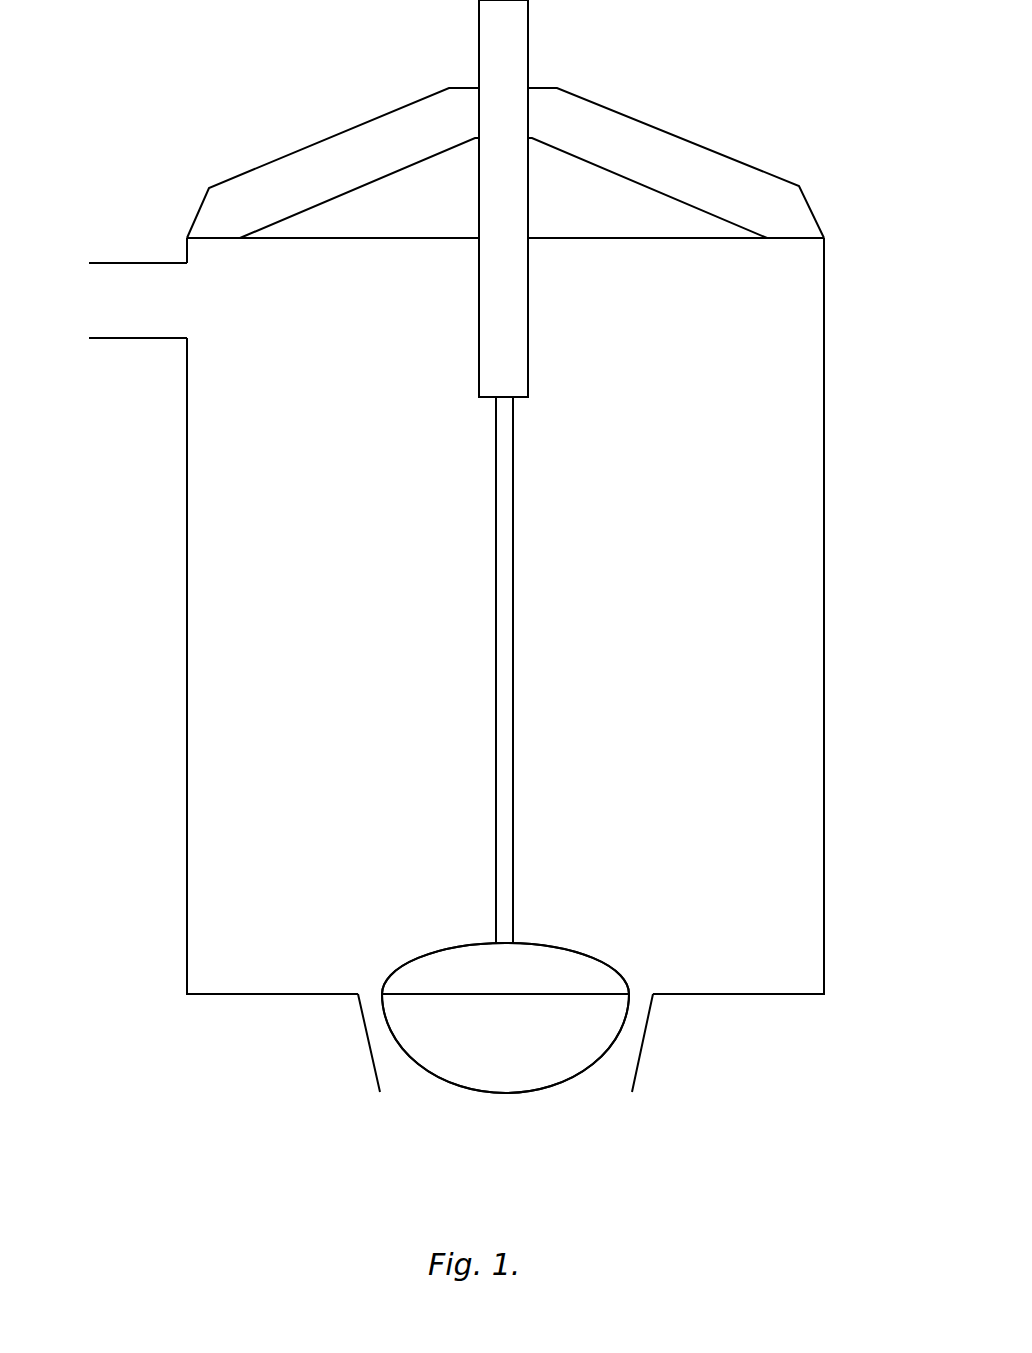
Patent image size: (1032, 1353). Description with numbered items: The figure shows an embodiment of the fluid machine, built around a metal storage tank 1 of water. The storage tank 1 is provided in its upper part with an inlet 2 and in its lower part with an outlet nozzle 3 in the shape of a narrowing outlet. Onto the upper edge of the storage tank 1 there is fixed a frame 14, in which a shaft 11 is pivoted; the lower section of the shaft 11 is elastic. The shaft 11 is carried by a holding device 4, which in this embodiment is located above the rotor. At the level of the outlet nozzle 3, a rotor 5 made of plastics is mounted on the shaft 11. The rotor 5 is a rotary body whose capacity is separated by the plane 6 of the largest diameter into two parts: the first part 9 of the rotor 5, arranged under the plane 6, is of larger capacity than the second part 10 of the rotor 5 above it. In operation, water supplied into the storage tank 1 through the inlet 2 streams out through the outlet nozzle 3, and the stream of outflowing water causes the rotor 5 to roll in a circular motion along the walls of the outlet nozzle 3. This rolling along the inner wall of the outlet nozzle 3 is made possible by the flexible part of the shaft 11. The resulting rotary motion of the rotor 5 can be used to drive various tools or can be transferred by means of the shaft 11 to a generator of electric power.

The storage tank 1 is at (825, 675).
The inlet 2 is at (133, 340).
The outlet nozzle 3 is at (370, 1058).
The holding device 4 is at (437, 58).
The rotor 5 is at (537, 1108).
The plane of the largest diameter 6 is at (573, 994).
The first part of the rotor 9 is at (573, 1045).
The second part of the rotor 10 is at (453, 962).
The shaft 11 is at (503, 600).
The frame 14 is at (656, 140).